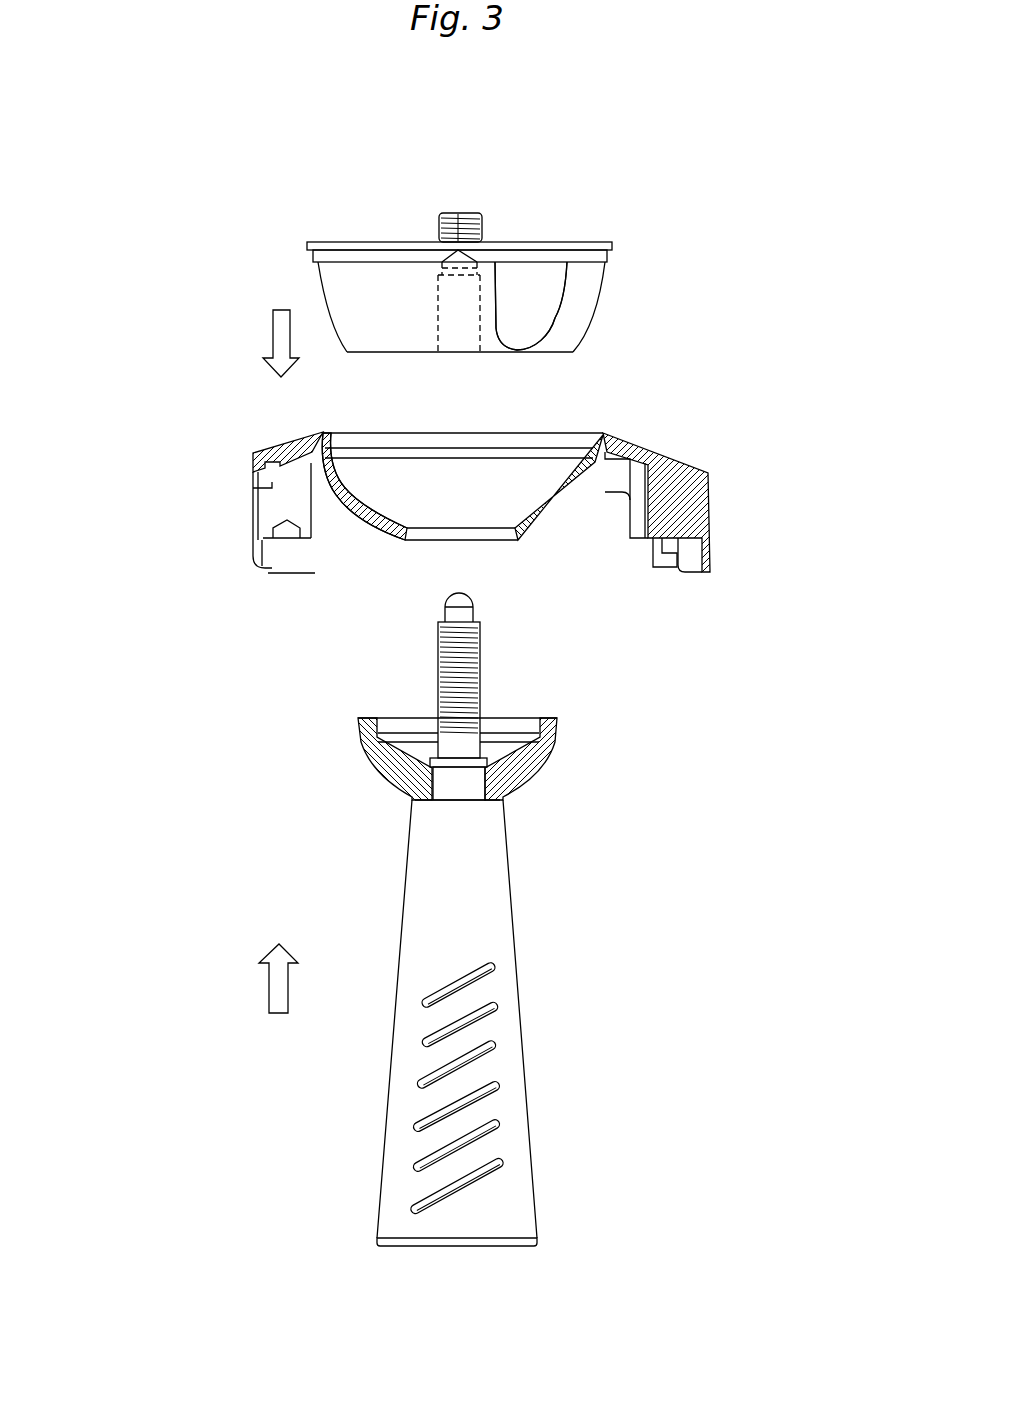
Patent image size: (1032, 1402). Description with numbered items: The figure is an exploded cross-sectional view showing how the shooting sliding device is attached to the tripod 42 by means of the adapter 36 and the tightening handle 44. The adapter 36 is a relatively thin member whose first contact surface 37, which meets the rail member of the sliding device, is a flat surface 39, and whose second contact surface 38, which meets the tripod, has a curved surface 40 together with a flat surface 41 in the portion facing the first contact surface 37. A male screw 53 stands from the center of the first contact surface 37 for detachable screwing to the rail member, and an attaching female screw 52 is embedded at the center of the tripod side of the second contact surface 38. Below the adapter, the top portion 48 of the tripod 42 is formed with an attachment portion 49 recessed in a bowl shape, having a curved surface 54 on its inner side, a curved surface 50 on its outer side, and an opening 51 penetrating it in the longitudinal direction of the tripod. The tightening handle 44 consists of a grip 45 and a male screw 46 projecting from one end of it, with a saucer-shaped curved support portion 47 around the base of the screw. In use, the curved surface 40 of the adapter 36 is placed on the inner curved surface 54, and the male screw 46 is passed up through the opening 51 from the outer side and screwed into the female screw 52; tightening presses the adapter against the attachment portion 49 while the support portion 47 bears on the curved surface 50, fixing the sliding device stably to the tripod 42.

The adapter 36 is at (502, 265).
The first contact surface 37 is at (542, 240).
The flat surface 39 is at (460, 256).
The second contact surface 38 is at (578, 318).
The curved surface 40 is at (531, 306).
The flat surface 41 is at (535, 355).
The attaching female screw 52 is at (440, 331).
The male screw 53 is at (470, 210).
The tripod 42 is at (708, 517).
The top portion 48 is at (497, 496).
The attachment portion 49 is at (378, 504).
The curved surface 50 is at (372, 521).
The opening 51 is at (426, 542).
The curved surface 54 is at (347, 470).
The male screw 46 is at (481, 672).
The support portion 47 is at (558, 747).
The tightening handle 44 is at (493, 1023).
The grip 45 is at (524, 1066).